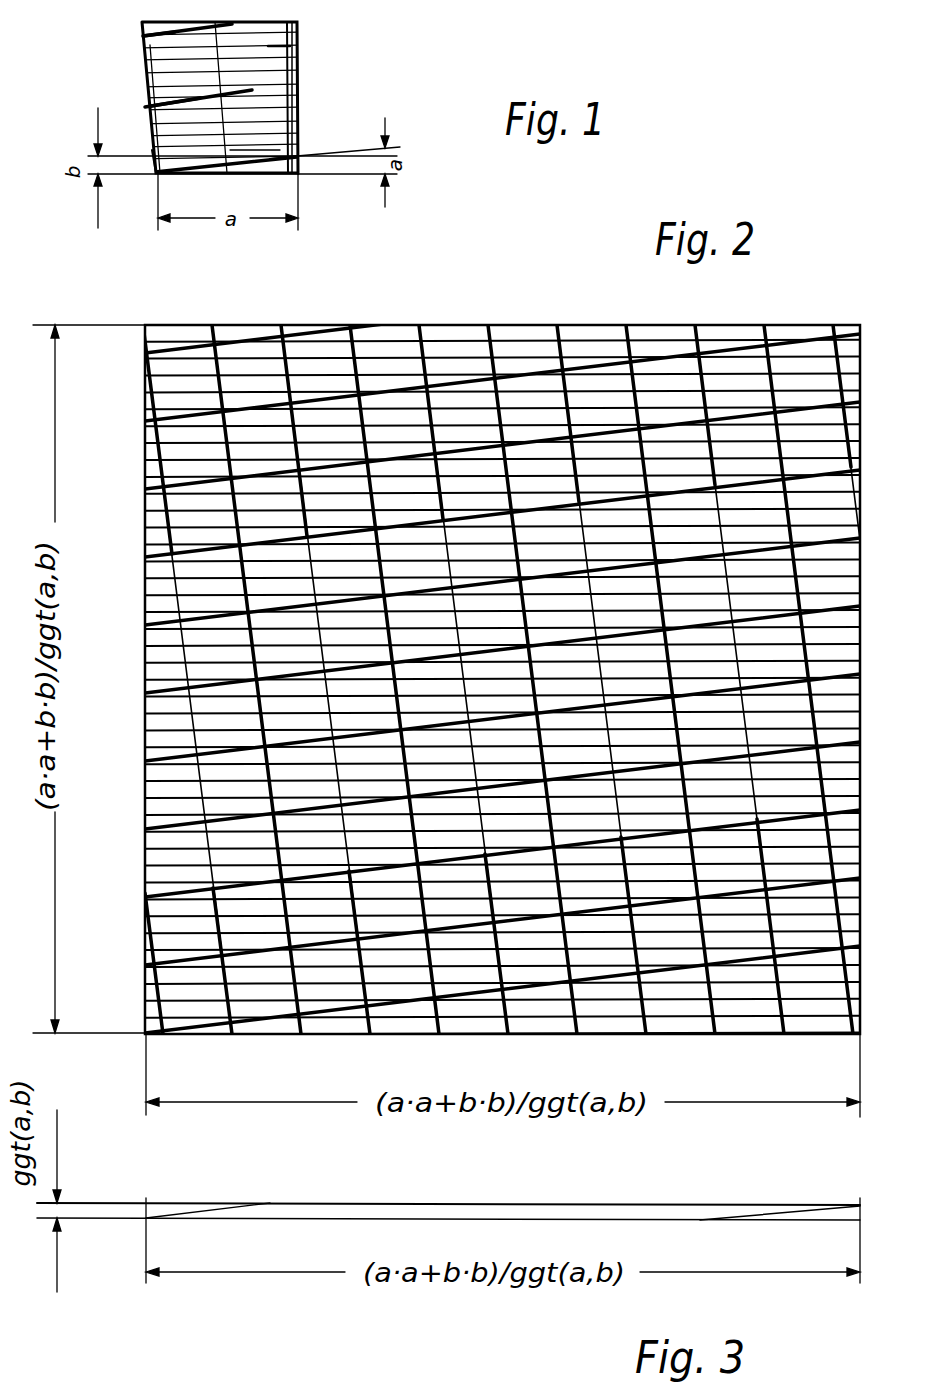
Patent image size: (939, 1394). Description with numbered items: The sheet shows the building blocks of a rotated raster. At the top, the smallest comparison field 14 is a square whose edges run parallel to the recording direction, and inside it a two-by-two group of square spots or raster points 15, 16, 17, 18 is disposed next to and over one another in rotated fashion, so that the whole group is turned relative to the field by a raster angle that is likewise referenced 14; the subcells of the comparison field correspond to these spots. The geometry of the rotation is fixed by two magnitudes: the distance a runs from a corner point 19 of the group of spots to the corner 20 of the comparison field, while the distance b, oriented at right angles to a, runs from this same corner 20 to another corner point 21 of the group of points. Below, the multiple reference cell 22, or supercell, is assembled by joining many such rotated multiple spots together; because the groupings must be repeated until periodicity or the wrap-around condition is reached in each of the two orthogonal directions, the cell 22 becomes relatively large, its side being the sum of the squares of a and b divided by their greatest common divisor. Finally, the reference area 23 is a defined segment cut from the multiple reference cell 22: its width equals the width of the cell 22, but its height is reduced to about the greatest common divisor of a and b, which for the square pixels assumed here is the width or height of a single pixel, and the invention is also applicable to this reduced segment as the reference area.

In FIG. 1, the smallest comparison field 14 is at (297, 82).
In FIG. 1, the spot 15 is at (178, 130).
In FIG. 1, the spot 16 is at (250, 148).
In FIG. 1, the spot 17 is at (142, 47).
In FIG. 1, the spot 18 is at (285, 45).
In FIG. 1, the corner point 19 is at (157, 177).
In FIG. 1, the corner of the comparison field 20 is at (300, 177).
In FIG. 1, the corner point 21 is at (297, 156).
In FIG. 2, the multiple reference cell 22 is at (522, 324).
In FIG. 3, the reference area 23 is at (658, 1203).